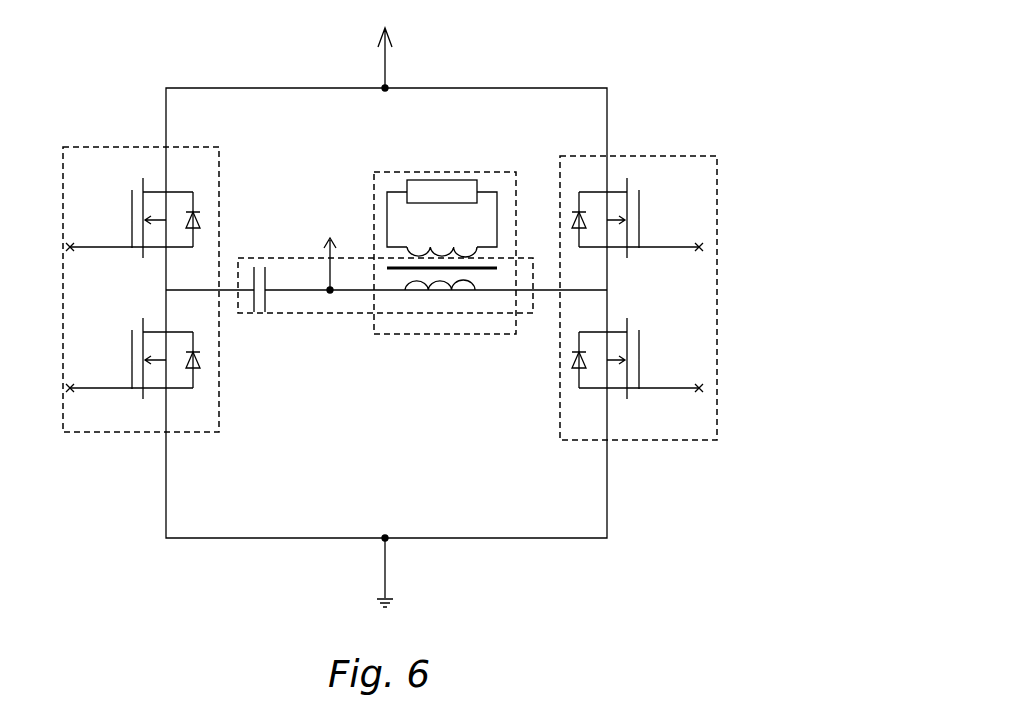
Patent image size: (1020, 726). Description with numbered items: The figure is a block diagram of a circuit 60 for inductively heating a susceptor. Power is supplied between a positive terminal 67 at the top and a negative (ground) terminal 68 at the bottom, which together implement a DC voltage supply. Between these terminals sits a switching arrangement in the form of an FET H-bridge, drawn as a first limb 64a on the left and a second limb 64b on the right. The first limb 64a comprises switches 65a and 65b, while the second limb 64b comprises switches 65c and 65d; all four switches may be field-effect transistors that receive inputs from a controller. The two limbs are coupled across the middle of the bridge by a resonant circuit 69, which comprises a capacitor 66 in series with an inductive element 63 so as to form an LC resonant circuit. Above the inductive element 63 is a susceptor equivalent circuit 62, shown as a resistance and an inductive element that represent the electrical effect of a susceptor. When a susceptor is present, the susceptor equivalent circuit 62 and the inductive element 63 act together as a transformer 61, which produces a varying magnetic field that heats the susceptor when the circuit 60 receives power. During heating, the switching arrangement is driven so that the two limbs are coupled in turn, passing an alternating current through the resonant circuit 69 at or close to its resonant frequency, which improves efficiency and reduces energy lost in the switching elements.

The circuit 60 is at (750, 510).
The transformer 61 is at (497, 171).
The susceptor equivalent circuit 62 is at (392, 191).
The inductive element 63 is at (437, 289).
The first limb 64a is at (72, 147).
The second limb 64b is at (620, 153).
The switch 65a is at (130, 210).
The switch 65b is at (133, 352).
The switch 65c is at (628, 212).
The switch 65d is at (628, 352).
The capacitor 66 is at (258, 268).
The positive terminal 67 is at (392, 60).
The negative (ground) terminal 68 is at (390, 593).
The resonant circuit 69 is at (328, 313).